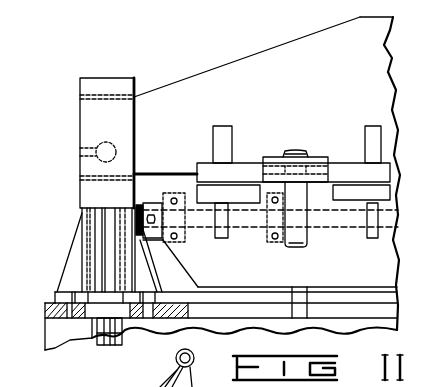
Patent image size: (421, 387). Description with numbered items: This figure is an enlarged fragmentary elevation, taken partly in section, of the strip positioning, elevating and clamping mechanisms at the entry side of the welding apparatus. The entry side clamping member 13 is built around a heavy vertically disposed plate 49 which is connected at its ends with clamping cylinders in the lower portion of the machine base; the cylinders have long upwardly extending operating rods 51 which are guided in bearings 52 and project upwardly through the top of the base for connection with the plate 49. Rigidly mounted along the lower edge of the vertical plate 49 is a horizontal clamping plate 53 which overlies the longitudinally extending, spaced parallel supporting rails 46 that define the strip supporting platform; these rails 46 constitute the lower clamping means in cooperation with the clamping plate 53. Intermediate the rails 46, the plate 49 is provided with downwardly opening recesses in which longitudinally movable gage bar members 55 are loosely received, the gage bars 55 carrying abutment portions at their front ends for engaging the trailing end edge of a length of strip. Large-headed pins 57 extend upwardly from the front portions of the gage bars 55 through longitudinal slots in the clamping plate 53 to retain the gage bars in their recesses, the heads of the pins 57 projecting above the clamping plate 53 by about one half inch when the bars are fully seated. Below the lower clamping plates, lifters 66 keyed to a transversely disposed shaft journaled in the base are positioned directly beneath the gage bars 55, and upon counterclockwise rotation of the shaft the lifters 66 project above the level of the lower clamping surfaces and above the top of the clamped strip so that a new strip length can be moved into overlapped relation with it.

The entry side clamping member 13 is at (337, 79).
The vertically disposed plate 49 is at (212, 80).
The supporting rails 46 is at (232, 165).
The large-headed pins 57 is at (304, 151).
The gage bar members 55 is at (335, 135).
The horizontal clamping plate 53 is at (362, 143).
The lifters 66 is at (297, 232).
The bearings 52 is at (90, 257).
The operating rods 51 is at (125, 322).